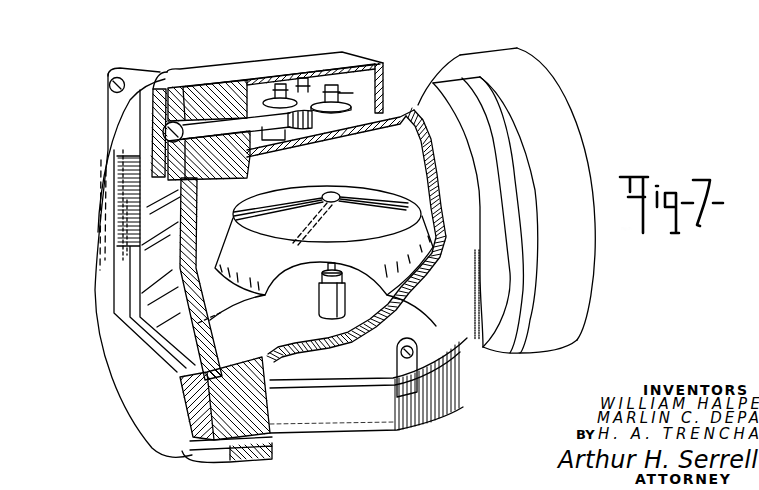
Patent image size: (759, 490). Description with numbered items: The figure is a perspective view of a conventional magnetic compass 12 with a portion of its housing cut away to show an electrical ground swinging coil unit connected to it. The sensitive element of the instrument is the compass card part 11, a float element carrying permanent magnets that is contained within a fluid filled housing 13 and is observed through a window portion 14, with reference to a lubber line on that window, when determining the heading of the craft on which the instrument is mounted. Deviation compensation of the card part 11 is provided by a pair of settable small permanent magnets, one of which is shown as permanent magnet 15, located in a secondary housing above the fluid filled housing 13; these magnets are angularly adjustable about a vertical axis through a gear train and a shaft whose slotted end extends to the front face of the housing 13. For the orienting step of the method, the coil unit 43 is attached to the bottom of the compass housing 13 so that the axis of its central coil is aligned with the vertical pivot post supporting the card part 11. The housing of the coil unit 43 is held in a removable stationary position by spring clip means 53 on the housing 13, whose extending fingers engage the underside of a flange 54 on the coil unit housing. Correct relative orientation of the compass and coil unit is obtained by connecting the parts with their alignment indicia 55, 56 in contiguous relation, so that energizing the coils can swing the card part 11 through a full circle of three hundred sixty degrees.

The compass card part 11 is at (372, 193).
The magnetic compass 12 is at (98, 104).
The fluid filled housing 13 is at (113, 145).
The window portion 14 is at (180, 268).
The permanent magnet 15 is at (363, 67).
The coil unit 43 is at (462, 410).
The spring clip means 53 is at (420, 362).
The flange 54 is at (321, 388).
The alignment indicia 55 is at (373, 380).
The alignment indicia 56 is at (372, 385).